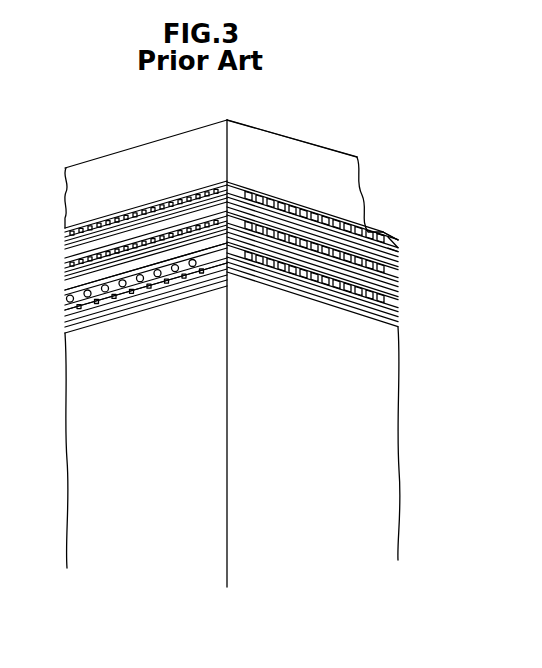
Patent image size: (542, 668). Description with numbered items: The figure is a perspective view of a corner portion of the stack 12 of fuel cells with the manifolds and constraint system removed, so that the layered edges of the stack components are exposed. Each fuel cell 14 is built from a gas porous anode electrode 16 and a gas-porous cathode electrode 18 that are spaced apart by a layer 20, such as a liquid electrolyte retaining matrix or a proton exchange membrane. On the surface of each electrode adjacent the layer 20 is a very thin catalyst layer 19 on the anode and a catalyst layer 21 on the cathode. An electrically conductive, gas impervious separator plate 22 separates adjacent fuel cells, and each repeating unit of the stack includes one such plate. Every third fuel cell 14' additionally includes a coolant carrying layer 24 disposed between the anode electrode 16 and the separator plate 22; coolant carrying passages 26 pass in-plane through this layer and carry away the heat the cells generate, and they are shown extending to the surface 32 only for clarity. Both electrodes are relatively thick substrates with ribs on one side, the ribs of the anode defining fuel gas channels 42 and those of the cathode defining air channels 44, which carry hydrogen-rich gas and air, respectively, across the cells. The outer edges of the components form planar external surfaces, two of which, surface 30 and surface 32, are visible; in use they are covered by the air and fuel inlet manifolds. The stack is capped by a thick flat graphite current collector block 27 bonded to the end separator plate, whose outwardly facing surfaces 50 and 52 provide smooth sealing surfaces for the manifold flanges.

The stack 12 is at (63, 225).
The fuel cell 14 is at (132, 222).
The fuel cell with coolant layer 14' is at (127, 287).
The anode electrode 16 is at (218, 223).
The cathode electrode 18 is at (334, 223).
The catalyst layer 19 is at (381, 229).
The layer 20 is at (108, 258).
The catalyst layer 21 is at (394, 244).
The separator plate 22 is at (243, 218).
The coolant carrying layer 24 is at (213, 260).
The coolant carrying passages 26 is at (134, 303).
The top current collector block 27 is at (322, 151).
The surface 30 is at (330, 418).
The surface 32 is at (164, 425).
The fuel gas channels 42 is at (149, 211).
The air channels 44 is at (320, 219).
The outwardly facing surface 50 is at (279, 147).
The outwardly facing surface 52 is at (117, 172).